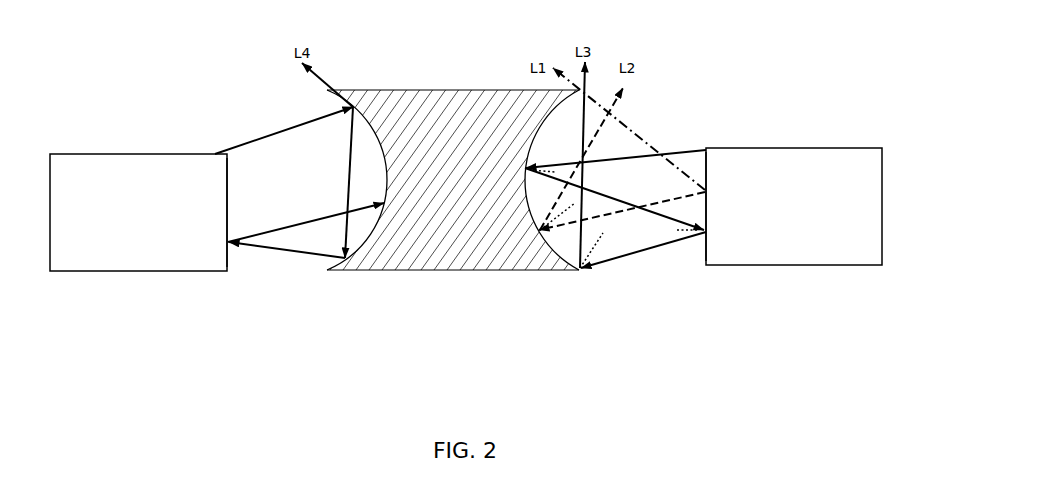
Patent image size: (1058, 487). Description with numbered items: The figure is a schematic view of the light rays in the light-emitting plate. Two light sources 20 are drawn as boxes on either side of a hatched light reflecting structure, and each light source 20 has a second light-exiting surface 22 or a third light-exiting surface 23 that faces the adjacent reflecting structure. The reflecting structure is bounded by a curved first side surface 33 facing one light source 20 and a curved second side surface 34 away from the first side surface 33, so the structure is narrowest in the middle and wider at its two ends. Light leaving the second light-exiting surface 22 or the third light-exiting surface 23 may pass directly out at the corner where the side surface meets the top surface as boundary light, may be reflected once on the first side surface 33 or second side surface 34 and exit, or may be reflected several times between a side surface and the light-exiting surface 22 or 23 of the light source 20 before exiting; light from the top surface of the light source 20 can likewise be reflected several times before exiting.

The light source 20 is at (135, 252).
The second light-exiting surface 22 is at (707, 217).
The third light-exiting surface 23 is at (225, 203).
The first side surface 33 is at (376, 231).
The second side surface 34 is at (523, 199).